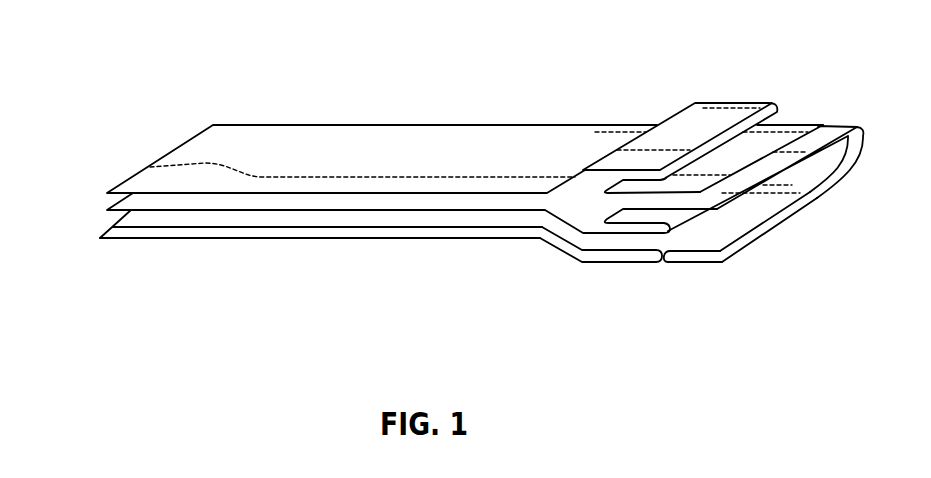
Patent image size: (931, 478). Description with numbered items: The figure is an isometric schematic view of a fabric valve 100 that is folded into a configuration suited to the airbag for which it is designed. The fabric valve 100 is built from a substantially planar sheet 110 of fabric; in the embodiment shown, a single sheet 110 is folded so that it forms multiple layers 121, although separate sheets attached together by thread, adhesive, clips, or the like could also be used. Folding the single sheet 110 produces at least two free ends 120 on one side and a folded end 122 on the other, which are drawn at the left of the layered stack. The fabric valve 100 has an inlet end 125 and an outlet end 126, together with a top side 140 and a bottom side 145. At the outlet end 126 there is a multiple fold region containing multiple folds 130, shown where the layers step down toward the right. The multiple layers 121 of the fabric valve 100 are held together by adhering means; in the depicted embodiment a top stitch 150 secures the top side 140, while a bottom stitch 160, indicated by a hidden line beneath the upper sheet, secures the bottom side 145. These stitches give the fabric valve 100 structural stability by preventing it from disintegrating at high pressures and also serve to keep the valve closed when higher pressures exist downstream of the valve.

The fabric valve 100 is at (164, 94).
The substantially planar sheet 110 is at (366, 164).
The free ends 120 is at (107, 210).
The multiple layers 121 is at (73, 185).
The folded end 122 is at (100, 236).
The inlet end 125 is at (107, 240).
The outlet end 126 is at (702, 263).
The multiple folds 130 is at (685, 275).
The top side 140 is at (855, 124).
The bottom side 145 is at (730, 259).
The top stitch 150 is at (694, 104).
The bottom stitch 160 is at (470, 177).